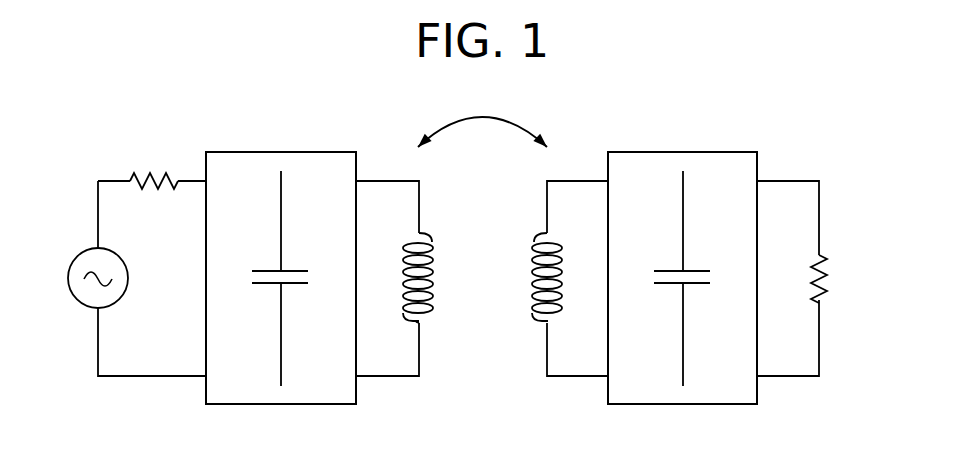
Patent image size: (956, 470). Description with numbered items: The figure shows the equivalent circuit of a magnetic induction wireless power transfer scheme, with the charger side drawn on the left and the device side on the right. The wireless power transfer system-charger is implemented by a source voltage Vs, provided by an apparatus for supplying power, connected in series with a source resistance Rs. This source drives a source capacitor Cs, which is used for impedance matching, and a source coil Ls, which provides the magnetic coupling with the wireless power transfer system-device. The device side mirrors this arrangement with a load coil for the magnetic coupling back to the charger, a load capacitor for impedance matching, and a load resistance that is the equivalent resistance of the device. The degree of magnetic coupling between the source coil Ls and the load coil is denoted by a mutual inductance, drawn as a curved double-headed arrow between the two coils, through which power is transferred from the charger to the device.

The source voltage Vs is at (83, 278).
The source resistance Rs is at (154, 167).
The source capacitor Cs is at (295, 278).
The source coil Ls is at (433, 278).